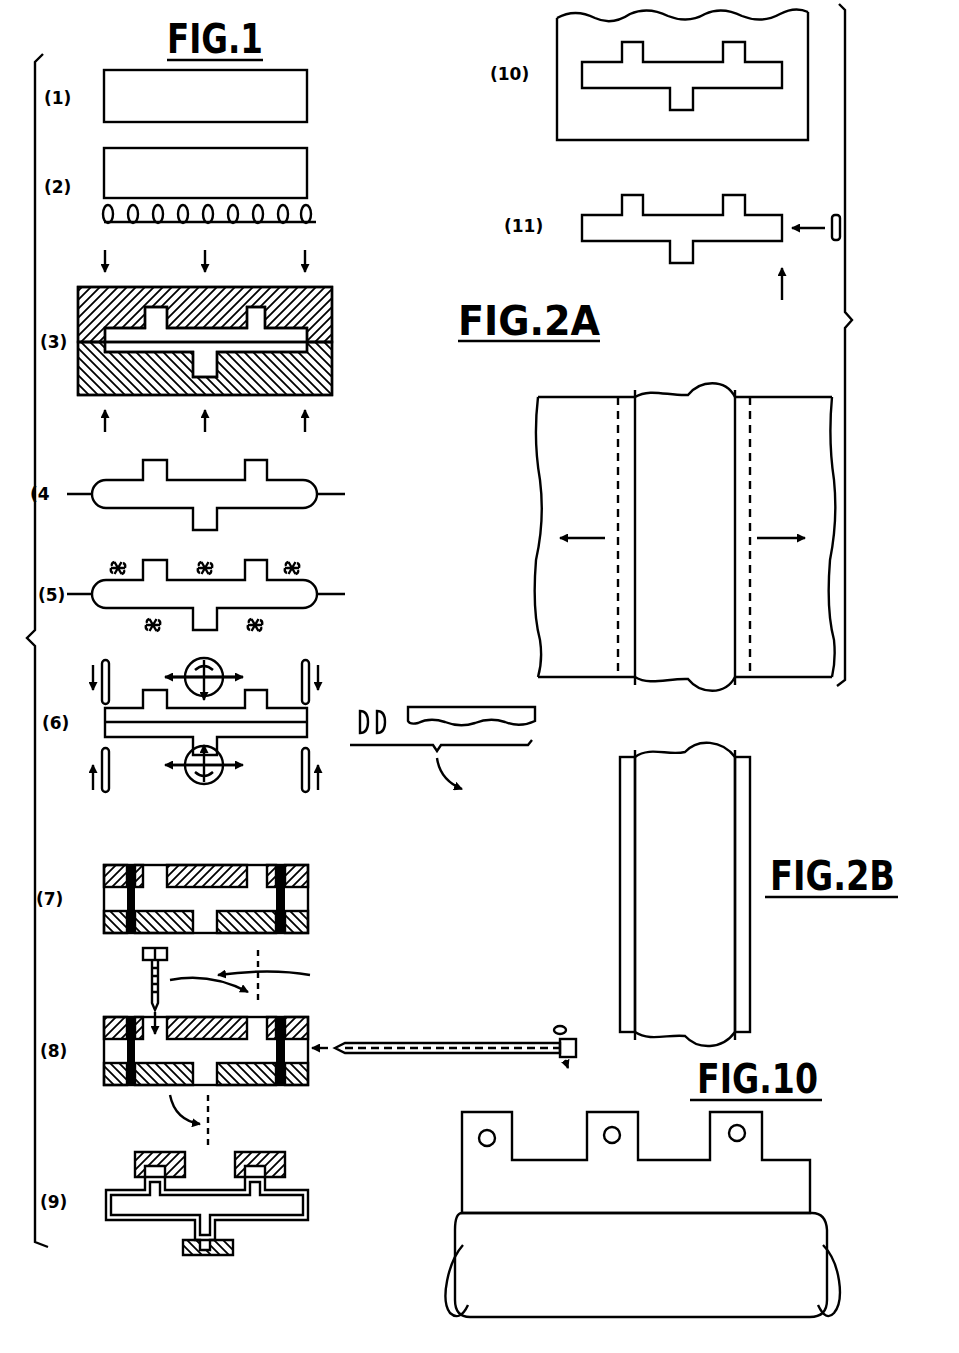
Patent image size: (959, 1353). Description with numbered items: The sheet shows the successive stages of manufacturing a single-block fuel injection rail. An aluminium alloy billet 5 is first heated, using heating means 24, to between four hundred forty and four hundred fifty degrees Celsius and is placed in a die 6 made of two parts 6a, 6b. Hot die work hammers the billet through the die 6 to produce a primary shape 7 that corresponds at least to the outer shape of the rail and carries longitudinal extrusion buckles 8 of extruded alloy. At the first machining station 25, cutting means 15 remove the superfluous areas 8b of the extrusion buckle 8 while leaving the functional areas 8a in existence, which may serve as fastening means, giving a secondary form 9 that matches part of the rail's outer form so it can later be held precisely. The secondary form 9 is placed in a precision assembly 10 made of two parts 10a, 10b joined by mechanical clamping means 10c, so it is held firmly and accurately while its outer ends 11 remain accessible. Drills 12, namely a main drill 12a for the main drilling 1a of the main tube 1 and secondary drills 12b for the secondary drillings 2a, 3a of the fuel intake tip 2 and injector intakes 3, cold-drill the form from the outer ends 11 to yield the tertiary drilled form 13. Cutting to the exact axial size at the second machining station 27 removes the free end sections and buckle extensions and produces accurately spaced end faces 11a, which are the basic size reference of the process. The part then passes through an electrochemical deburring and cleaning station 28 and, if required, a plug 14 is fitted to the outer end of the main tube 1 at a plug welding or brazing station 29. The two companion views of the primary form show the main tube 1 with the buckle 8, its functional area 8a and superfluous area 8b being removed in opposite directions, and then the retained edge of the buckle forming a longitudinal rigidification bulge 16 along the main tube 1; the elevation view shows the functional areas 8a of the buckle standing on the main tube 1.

In FIG. 1, the main tube 1 is at (760, 215).
In FIG. 2A, the main tube 1 is at (650, 410).
In FIG. 2B, the main tube 1 is at (650, 878).
In FIG. 10, the main tube 1 is at (480, 1243).
In FIG. 1, the main drilling 1a is at (204, 1180).
In FIG. 1, the fuel intake tip 2 is at (242, 470).
In FIG. 1, the injector intake 3 is at (204, 481).
In FIG. 1, the secondary drilling 2a is at (170, 1190).
In FIG. 1, the secondary drilling 3a is at (230, 1158).
In FIG. 1, the aluminium alloy billet 5 is at (296, 93).
In FIG. 1, the die 6 is at (220, 341).
In FIG. 1, the die part 6a is at (240, 287).
In FIG. 1, the die part 6b is at (256, 385).
In FIG. 1, the primary shape 7 is at (204, 479).
In FIG. 1, the extrusion buckle 8 is at (322, 492).
In FIG. 2A, the extrusion buckle 8 is at (690, 509).
In FIG. 2A, the functional area 8a is at (742, 416).
In FIG. 2B, the functional area 8a is at (748, 781).
In FIG. 10, the functional area 8a is at (537, 1182).
In FIG. 1, the superfluous area 8b is at (468, 707).
In FIG. 2A, the superfluous area 8b is at (800, 416).
In FIG. 1, the secondary form 9 is at (286, 708).
In FIG. 1, the precision assembly 10 is at (209, 894).
In FIG. 1, the assembly part 10a is at (190, 866).
In FIG. 1, the assembly part 10b is at (292, 933).
In FIG. 1, the mechanical clamping means 10c is at (277, 866).
In FIG. 1, the outer end 11 is at (156, 690).
In FIG. 1, the end face 11a is at (310, 725).
In FIG. 1, the drill 12 is at (348, 1038).
In FIG. 1, the main drill 12a is at (452, 1042).
In FIG. 1, the secondary drill 12b is at (150, 986).
In FIG. 1, the tertiary drilled form 13 is at (300, 1190).
In FIG. 1, the plug 14 is at (836, 214).
In FIG. 1, the cutting means 15 is at (100, 785).
In FIG. 2B, the longitudinal rigidification bulge 16 is at (727, 875).
In FIG. 1, the heating means 24 is at (320, 222).
In FIG. 1, the first machining station 25 is at (185, 776).
In FIG. 1, the second machining station 27 is at (135, 1160).
In FIG. 1, the electrochemical deburring and cleaning station 28 is at (793, 94).
In FIG. 1, the plug welding or brazing station 29 is at (799, 285).